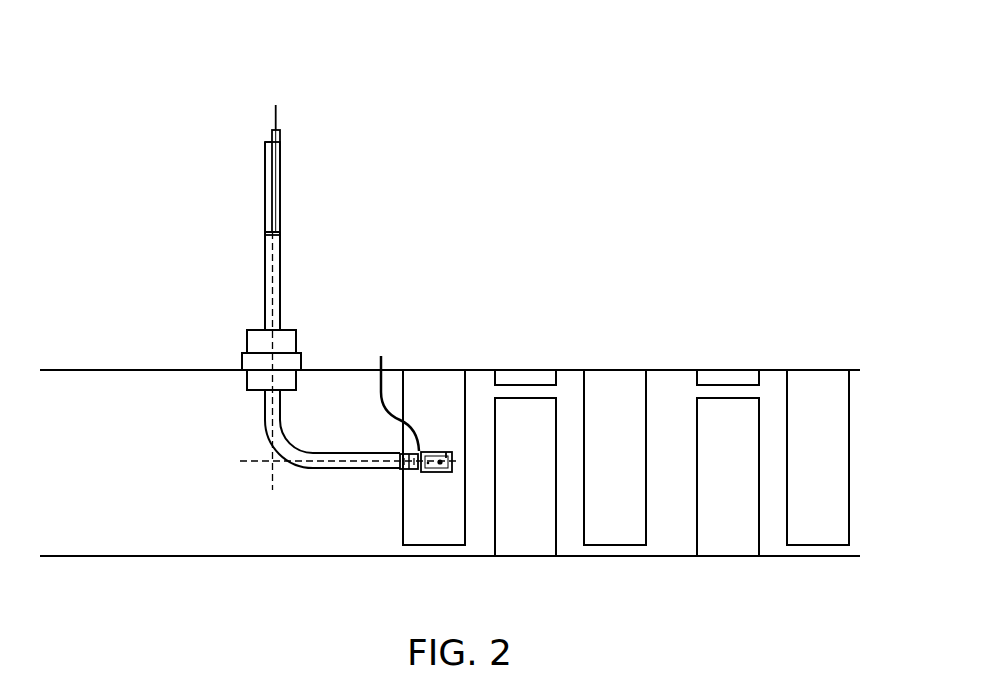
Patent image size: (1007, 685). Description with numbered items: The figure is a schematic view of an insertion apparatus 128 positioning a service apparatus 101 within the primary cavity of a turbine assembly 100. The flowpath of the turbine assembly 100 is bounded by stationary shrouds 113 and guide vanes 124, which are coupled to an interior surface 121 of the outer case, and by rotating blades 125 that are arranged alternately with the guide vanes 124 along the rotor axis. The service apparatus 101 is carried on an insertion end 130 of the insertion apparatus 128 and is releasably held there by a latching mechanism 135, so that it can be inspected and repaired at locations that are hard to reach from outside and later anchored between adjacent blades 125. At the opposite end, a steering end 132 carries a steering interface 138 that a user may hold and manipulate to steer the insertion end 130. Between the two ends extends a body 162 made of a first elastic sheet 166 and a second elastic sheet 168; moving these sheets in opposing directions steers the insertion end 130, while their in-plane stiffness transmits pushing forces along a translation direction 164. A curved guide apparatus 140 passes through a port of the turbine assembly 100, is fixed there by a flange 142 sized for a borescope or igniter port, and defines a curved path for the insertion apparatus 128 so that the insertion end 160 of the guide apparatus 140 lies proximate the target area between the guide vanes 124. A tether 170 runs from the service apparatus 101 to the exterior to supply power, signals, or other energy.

The turbine assembly 100 is at (773, 317).
The service apparatus 101 is at (434, 446).
The shroud 113 is at (526, 380).
The interior surface 121 is at (668, 370).
The guide vane 124 is at (412, 540).
The blade 125 is at (531, 540).
The insertion apparatus 128 is at (263, 62).
The insertion end 130 is at (416, 479).
The steering end 132 is at (286, 120).
The latching mechanism 135 is at (390, 391).
The steering interface 138 is at (282, 140).
The guide apparatus 140 is at (288, 298).
The flange 142 is at (242, 355).
The insertion end of guide apparatus 160 is at (400, 469).
The body 162 is at (260, 186).
The translation direction 164 is at (252, 462).
The first elastic sheet 166 is at (282, 212).
The second elastic sheet 168 is at (264, 212).
The tether 170 is at (274, 108).